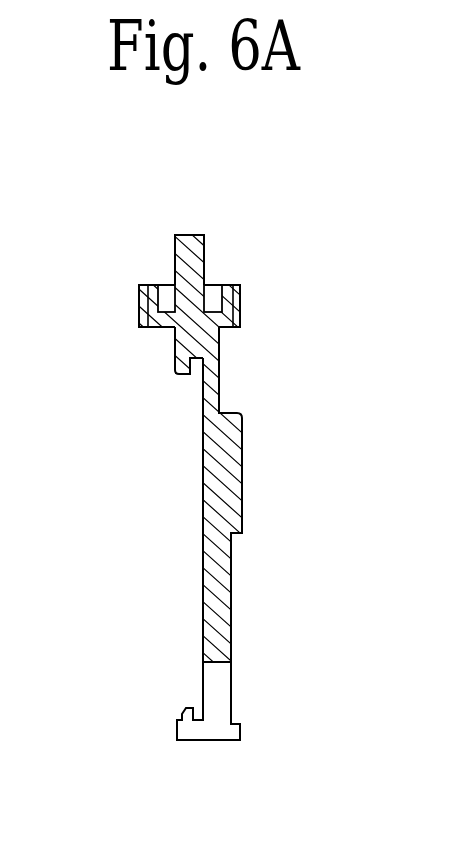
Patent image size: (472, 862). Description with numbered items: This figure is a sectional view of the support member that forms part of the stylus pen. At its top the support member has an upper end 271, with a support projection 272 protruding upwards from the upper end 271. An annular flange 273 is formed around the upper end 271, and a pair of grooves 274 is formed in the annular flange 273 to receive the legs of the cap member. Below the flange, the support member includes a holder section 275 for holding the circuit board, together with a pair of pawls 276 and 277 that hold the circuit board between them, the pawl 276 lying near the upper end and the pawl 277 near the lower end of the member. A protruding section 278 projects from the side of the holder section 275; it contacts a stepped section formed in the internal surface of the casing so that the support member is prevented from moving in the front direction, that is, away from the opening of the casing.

The upper end 271 is at (223, 325).
The support projection 272 is at (198, 233).
The annular flange 273 is at (222, 283).
The grooves 274 is at (139, 290).
The holder section 275 is at (210, 473).
The pawl 276 is at (177, 380).
The pawl 277 is at (180, 717).
The protruding section 278 is at (240, 522).